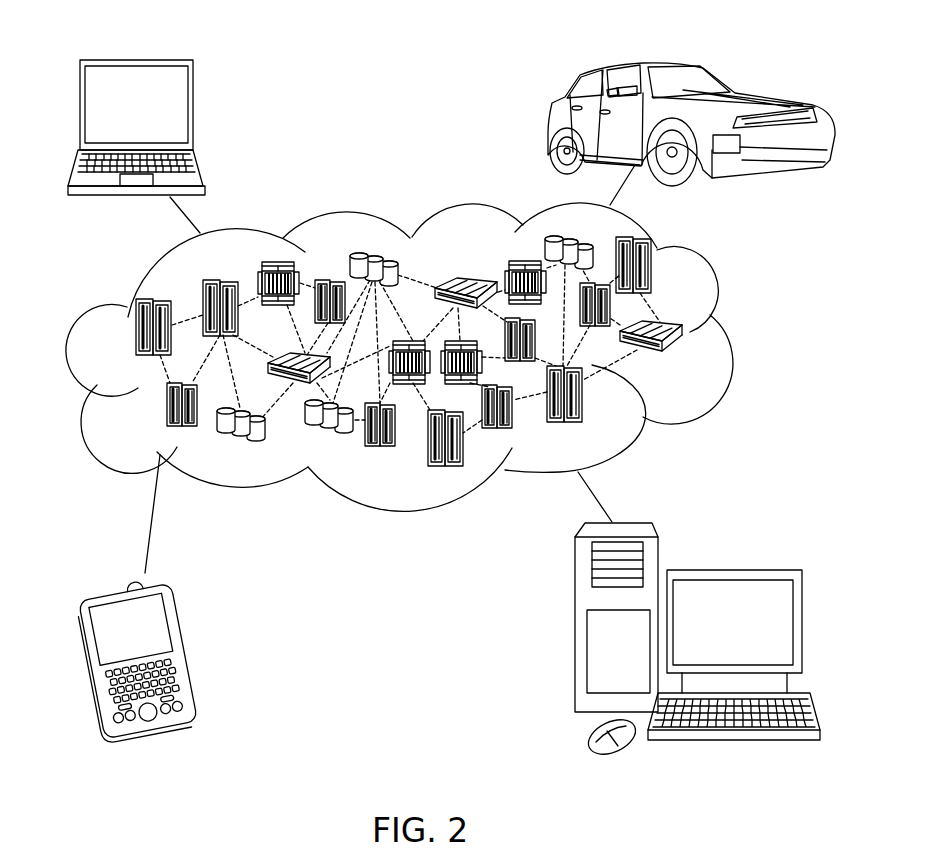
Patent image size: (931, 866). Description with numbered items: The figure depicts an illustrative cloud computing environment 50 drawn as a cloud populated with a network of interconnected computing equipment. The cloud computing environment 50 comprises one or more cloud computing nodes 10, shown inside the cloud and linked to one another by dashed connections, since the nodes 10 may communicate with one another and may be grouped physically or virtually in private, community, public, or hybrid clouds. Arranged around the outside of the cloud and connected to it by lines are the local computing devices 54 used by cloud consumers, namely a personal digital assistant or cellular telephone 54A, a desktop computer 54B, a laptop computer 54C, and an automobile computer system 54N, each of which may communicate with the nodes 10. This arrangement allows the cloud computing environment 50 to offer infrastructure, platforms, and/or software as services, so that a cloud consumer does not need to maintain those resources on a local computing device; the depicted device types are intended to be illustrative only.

The cloud computing node 10 is at (712, 376).
The cloud computing environment 50 is at (730, 330).
The local computing devices 54 is at (211, 67).
The personal digital assistant or cellular telephone 54A is at (187, 648).
The desktop computer 54B is at (750, 568).
The laptop computer 54C is at (193, 104).
The automobile computer system 54N is at (550, 120).